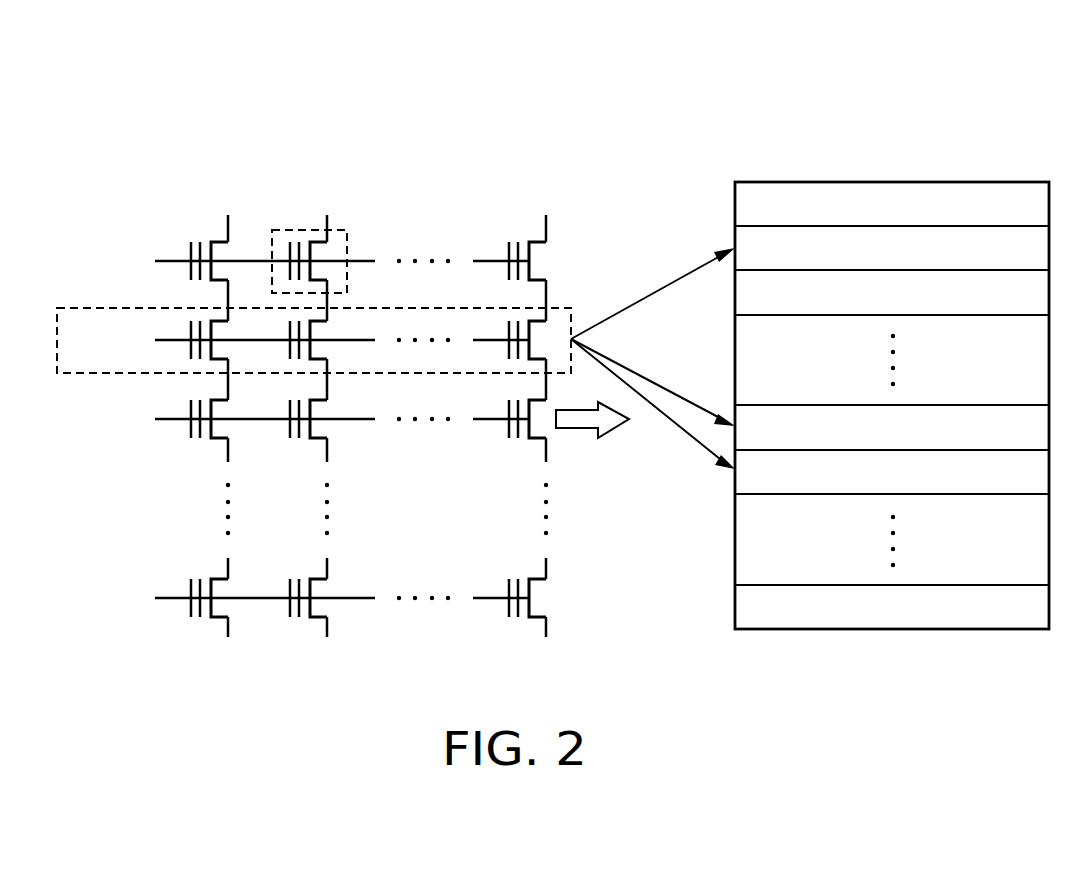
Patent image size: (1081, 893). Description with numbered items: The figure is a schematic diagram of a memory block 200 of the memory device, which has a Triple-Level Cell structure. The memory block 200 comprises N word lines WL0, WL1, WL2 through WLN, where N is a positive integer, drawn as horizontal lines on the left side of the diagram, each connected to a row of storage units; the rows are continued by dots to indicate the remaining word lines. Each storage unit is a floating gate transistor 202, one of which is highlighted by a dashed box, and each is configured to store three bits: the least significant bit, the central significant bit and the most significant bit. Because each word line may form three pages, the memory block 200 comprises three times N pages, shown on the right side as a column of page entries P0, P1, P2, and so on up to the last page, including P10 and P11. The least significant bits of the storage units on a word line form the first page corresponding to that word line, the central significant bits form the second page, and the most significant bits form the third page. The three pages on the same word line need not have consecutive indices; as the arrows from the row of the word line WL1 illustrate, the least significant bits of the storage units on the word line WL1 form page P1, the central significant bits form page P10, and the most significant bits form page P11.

The memory block 200 is at (660, 106).
The floating gate transistor 202 is at (348, 245).
The word line WL0 is at (305, 261).
The word line WL1 is at (305, 340).
The word line WL2 is at (305, 419).
The word line WLN is at (301, 598).
The page P0 is at (892, 206).
The page P1 is at (892, 250).
The page P2 is at (892, 295).
The page P10 is at (892, 431).
The page P11 is at (892, 474).